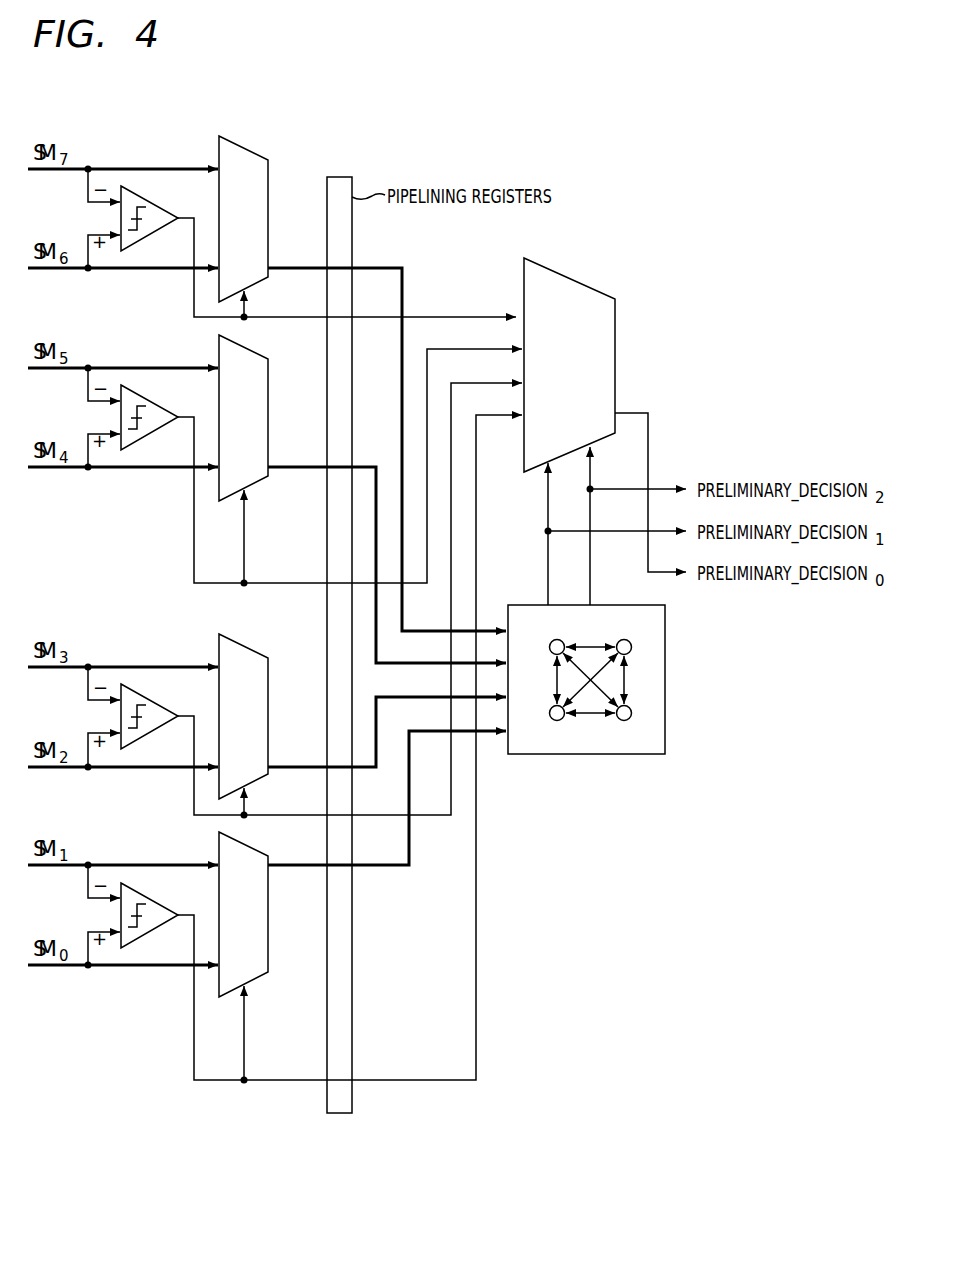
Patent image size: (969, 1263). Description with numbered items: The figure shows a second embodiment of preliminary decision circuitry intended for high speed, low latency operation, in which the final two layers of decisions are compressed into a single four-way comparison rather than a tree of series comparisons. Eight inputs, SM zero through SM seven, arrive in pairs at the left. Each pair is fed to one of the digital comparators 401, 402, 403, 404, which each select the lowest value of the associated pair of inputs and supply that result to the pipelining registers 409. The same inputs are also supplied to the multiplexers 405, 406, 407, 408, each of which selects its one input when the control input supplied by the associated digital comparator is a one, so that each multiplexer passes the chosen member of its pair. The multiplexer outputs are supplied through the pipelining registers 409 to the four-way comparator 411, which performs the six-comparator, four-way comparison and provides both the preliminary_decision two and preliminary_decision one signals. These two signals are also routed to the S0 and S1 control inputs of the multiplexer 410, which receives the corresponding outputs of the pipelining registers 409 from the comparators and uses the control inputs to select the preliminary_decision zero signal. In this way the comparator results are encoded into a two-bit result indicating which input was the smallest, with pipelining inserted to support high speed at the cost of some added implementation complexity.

The digital comparator 401 is at (148, 899).
The digital comparator 402 is at (148, 700).
The digital comparator 403 is at (148, 401).
The digital comparator 404 is at (148, 202).
The multiplexer 405 is at (252, 981).
The multiplexer 406 is at (254, 647).
The multiplexer 407 is at (252, 483).
The multiplexer 408 is at (254, 149).
The pipelining registers 409 is at (352, 951).
The multiplexer 410 is at (556, 272).
The four-way comparator 411 is at (668, 680).